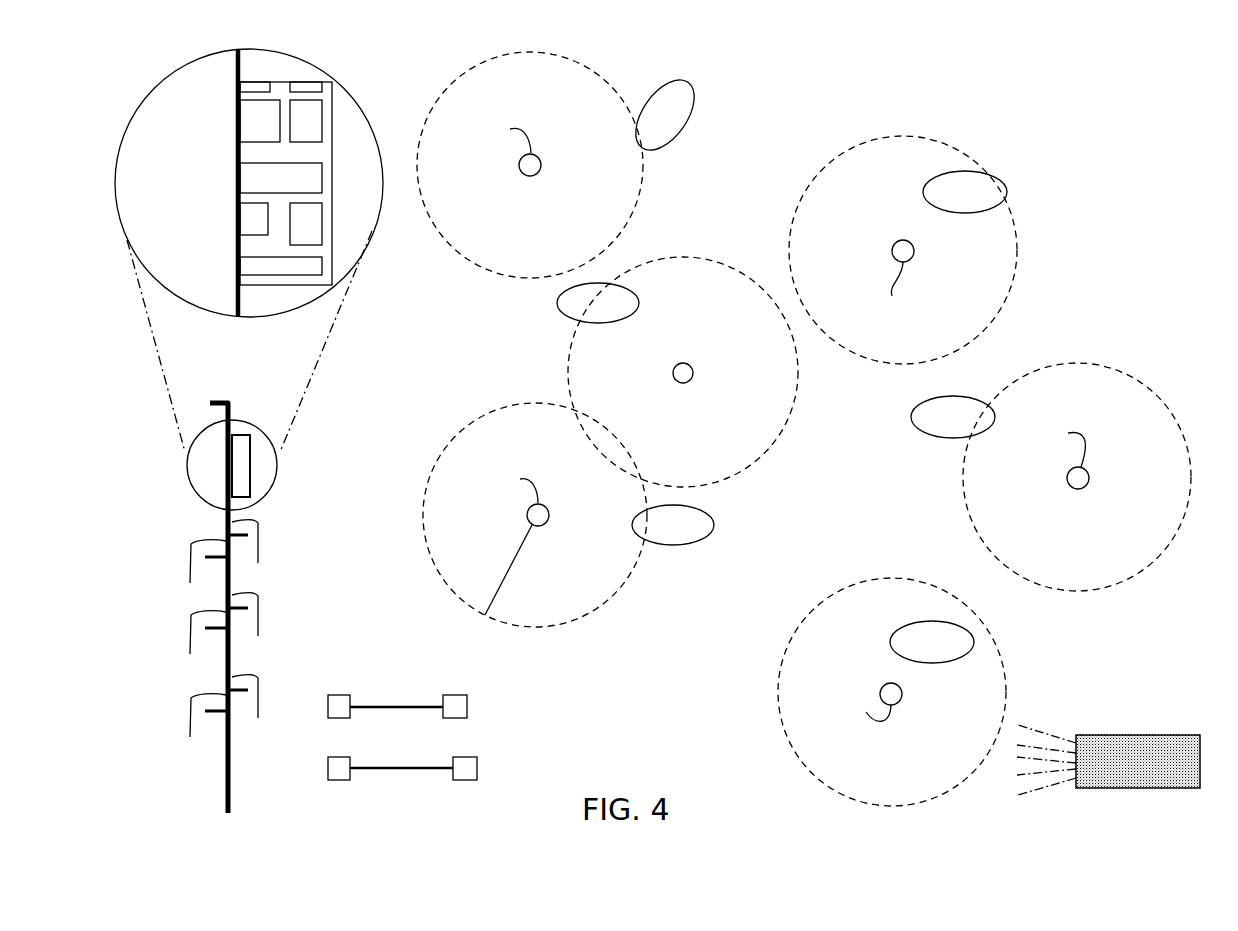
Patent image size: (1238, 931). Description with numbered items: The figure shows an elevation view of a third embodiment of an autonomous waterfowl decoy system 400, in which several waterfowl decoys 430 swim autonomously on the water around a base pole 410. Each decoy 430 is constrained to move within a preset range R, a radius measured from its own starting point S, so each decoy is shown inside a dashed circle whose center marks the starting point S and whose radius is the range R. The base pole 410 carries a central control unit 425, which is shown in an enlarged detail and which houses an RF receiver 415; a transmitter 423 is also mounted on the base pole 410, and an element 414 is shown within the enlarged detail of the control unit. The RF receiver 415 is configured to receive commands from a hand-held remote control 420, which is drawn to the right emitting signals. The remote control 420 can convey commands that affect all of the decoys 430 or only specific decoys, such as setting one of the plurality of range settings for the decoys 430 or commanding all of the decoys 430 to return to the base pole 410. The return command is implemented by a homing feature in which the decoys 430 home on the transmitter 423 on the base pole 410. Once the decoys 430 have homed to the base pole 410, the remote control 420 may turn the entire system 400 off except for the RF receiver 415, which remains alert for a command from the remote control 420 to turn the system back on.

The autonomous waterfowl decoy system 400 is at (1092, 184).
The base pole 410 is at (223, 782).
The antenna element 414 is at (270, 173).
The RF receiver 415 is at (310, 215).
The hand-held remote control 420 is at (1128, 745).
The transmitter 423 is at (322, 122).
The central control unit 425 is at (250, 463).
The waterfowl decoys 430 is at (703, 535).
The starting point S is at (789, 422).
The preset range (radius) R is at (497, 593).